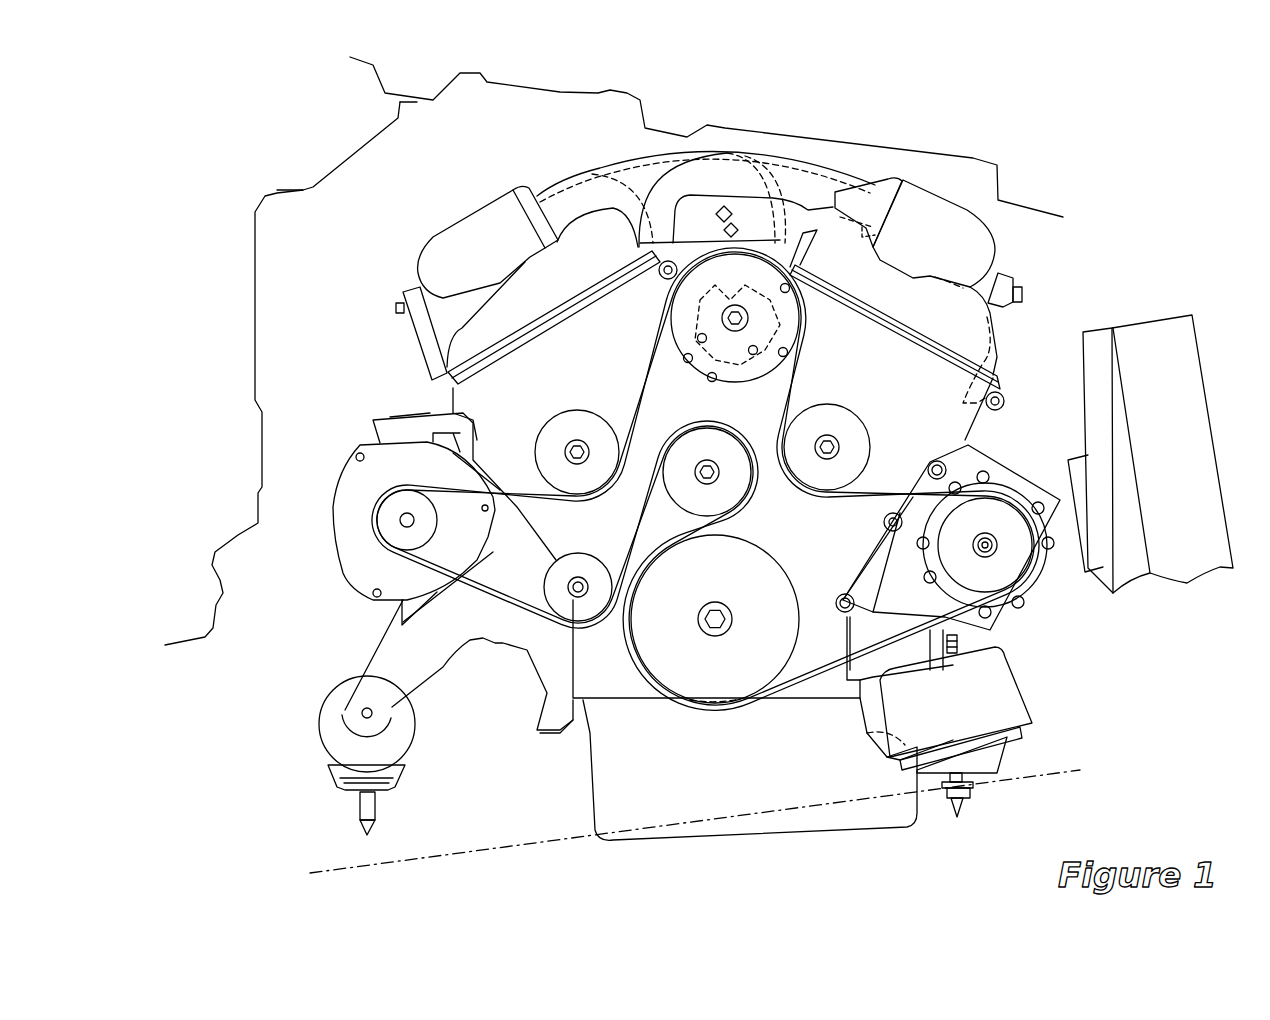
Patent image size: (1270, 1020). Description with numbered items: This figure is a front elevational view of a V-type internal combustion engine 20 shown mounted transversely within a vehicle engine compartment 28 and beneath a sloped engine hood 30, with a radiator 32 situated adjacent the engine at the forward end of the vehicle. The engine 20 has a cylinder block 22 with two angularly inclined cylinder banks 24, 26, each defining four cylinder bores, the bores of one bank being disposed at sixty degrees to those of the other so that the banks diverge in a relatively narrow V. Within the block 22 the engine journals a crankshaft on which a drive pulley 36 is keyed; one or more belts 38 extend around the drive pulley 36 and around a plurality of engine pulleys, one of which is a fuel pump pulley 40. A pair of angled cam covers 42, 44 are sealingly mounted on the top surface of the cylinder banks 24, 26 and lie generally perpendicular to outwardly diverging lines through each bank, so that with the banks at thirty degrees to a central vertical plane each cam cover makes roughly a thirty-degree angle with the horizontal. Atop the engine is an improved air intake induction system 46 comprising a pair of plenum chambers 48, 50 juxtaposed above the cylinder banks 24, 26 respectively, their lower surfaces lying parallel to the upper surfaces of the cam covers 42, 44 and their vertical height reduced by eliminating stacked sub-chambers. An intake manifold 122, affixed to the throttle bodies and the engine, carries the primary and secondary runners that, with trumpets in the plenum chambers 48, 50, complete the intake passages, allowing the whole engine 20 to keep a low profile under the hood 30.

The internal combustion engine 20 is at (230, 678).
The cylinder block 22 is at (630, 700).
The cylinder bank 24 is at (547, 540).
The cylinder bank 26 is at (945, 617).
The engine compartment 28 is at (265, 338).
The engine hood 30 is at (538, 77).
The radiator 32 is at (1210, 383).
The drive pulley 36 is at (760, 543).
The belts 38 is at (633, 388).
The fuel pump pulley 40 is at (728, 393).
The cam cover 42 is at (455, 330).
The cam cover 44 is at (1002, 308).
The air intake induction system 46 is at (560, 163).
The plenum chamber 48 is at (455, 222).
The plenum chamber 50 is at (935, 195).
The intake manifold 122 is at (768, 152).